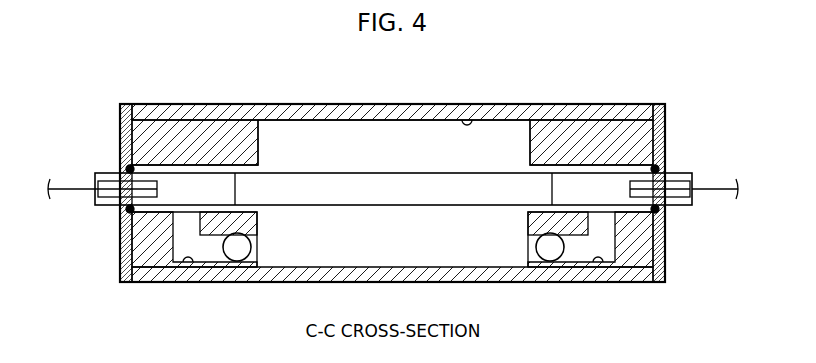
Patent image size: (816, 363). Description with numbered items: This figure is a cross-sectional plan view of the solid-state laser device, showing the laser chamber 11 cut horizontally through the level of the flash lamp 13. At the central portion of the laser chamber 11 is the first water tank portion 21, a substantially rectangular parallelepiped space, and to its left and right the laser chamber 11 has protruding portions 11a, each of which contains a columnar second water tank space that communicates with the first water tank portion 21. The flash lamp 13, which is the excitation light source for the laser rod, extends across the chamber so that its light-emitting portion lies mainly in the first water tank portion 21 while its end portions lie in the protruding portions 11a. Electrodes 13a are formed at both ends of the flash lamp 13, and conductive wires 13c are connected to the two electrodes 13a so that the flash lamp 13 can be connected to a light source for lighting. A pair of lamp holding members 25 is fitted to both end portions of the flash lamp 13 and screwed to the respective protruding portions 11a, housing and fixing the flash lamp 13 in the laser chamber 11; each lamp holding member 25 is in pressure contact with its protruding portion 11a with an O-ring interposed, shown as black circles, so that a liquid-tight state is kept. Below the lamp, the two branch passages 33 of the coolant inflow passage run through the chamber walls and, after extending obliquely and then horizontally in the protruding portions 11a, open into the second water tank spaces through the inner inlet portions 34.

The laser chamber 11 is at (327, 104).
The protruding portion 11a is at (200, 113).
The flash lamp 13 is at (372, 183).
The electrode 13a is at (110, 180).
The conductive wire 13c is at (72, 187).
The first water tank portion 21 is at (466, 113).
The lamp holding member 25 is at (122, 265).
The branch passage 33 is at (181, 263).
The inner inlet portion 34 is at (167, 238).